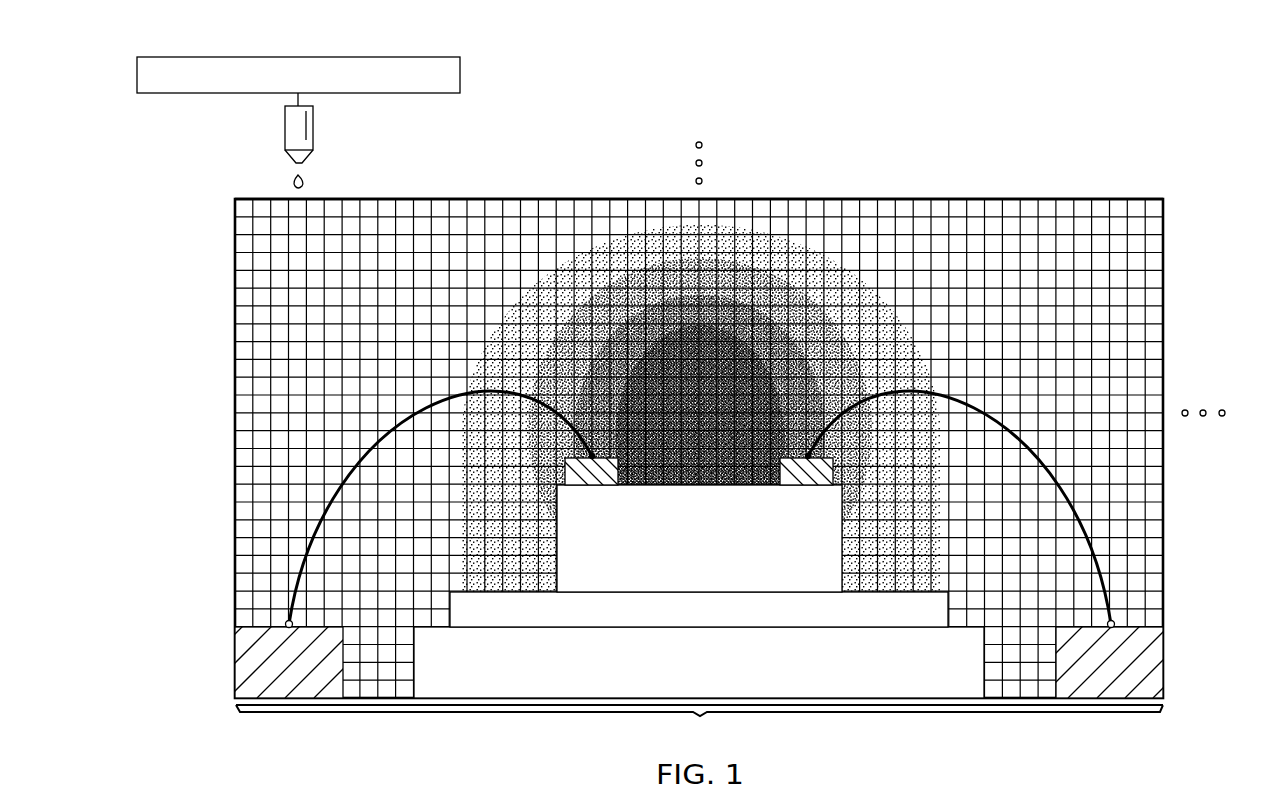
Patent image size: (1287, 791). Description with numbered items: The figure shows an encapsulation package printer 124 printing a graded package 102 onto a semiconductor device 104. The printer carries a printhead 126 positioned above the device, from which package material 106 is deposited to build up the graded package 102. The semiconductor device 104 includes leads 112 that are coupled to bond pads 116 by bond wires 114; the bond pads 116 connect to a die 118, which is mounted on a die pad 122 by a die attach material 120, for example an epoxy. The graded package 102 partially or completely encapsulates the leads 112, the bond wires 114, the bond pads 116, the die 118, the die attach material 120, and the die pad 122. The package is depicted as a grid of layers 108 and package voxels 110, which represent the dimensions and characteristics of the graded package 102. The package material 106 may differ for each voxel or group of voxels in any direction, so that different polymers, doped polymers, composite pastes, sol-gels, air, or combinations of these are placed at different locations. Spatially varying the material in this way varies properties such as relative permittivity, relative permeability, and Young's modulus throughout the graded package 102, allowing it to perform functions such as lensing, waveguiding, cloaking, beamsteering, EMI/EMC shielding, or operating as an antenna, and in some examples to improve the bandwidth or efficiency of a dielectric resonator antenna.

The graded package 102 is at (209, 418).
The semiconductor device 104 is at (699, 723).
The package material 106 is at (306, 182).
The layers 108 is at (1176, 205).
The package voxels 110 is at (1162, 164).
The leads 112 is at (243, 667).
The bond wires 114 is at (320, 528).
The bond pads 116 is at (592, 481).
The die 118 is at (699, 538).
The die attach material 120 is at (624, 629).
The die pad 122 is at (699, 662).
The encapsulation package printer 124 is at (461, 74).
The printhead 126 is at (284, 128).